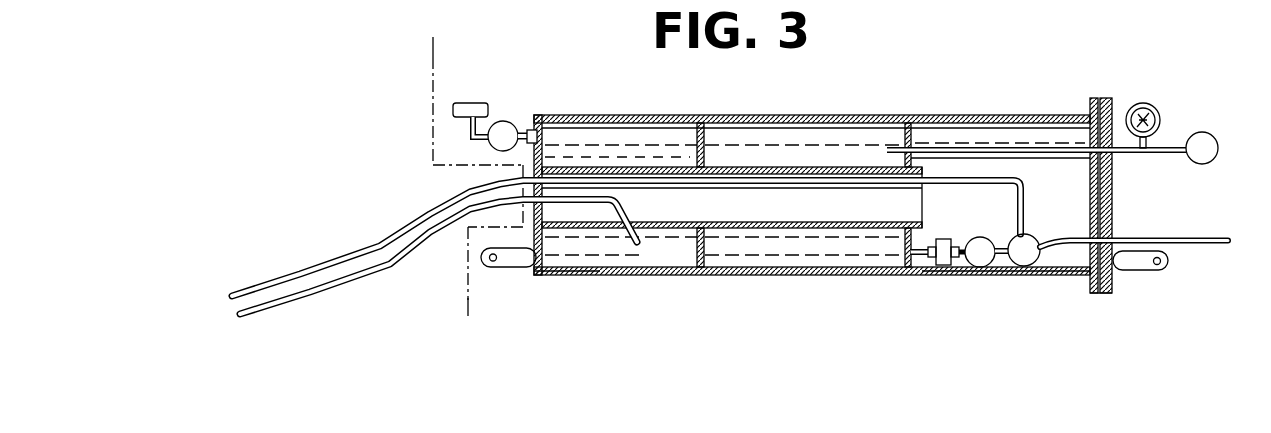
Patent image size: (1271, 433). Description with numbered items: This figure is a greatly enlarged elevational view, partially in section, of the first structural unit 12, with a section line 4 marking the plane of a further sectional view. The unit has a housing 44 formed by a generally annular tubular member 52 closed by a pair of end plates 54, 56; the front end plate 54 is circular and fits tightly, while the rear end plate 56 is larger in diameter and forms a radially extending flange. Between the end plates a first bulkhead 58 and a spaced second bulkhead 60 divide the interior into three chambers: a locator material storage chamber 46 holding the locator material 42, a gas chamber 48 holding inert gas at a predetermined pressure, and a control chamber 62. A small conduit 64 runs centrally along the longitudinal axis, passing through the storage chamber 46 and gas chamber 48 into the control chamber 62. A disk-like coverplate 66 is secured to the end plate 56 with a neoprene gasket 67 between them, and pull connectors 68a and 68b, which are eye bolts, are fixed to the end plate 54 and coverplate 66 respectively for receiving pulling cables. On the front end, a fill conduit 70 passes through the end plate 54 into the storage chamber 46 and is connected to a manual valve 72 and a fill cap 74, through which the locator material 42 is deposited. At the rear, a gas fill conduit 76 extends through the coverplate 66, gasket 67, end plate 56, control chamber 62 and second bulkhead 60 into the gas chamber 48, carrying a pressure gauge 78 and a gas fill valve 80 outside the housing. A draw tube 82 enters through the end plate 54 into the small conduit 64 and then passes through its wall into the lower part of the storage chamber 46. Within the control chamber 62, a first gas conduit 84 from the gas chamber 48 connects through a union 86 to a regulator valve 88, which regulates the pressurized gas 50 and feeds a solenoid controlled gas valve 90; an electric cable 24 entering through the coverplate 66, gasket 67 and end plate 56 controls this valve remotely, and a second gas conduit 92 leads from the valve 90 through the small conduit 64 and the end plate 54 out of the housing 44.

The section line 4- 4 is at (433, 47).
The first structural unit 12 is at (698, 290).
The electric cable 24 is at (1166, 237).
The locator material 42 is at (598, 258).
The housing 44 is at (931, 112).
The locator material storage chamber 46 is at (560, 277).
The gas chamber 48 is at (762, 266).
The pressurized gas 50 is at (842, 264).
The tubular member 52 is at (590, 115).
The end plate 54 is at (531, 128).
The end plate 56 is at (1089, 99).
The first bulkhead 58 is at (707, 126).
The second bulkhead 60 is at (900, 130).
The control chamber 62 is at (1067, 256).
The small conduit 64 is at (750, 167).
The coverplate 66 is at (1113, 182).
The gasket 67 is at (1093, 290).
The pull connector 68a is at (508, 266).
The pull connector 68b is at (1147, 270).
The fill conduit 70 is at (542, 151).
The manual valve 72 is at (499, 121).
The fill cap 74 is at (456, 104).
The gas fill conduit 76 is at (1035, 156).
The pressure gauge 78 is at (1146, 103).
The gas fill valve 80 is at (1201, 132).
The locator material draw tube 82 is at (385, 252).
The first gas conduit 84 is at (880, 272).
The union 86 is at (934, 272).
The regulator valve 88 is at (965, 268).
The solenoid controlled gas valve 90 is at (1012, 262).
The second gas conduit 92 is at (755, 183).